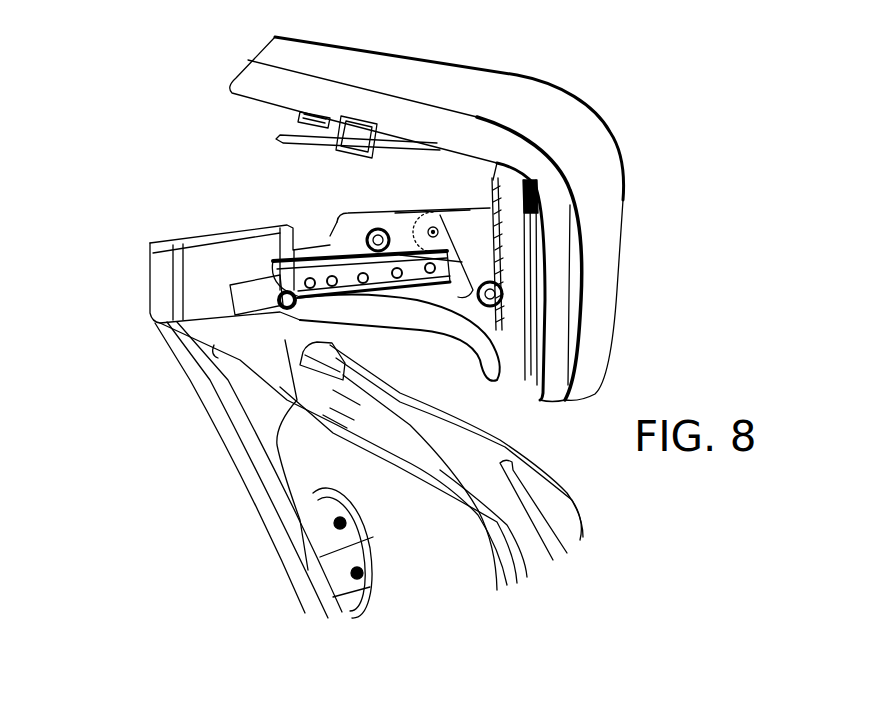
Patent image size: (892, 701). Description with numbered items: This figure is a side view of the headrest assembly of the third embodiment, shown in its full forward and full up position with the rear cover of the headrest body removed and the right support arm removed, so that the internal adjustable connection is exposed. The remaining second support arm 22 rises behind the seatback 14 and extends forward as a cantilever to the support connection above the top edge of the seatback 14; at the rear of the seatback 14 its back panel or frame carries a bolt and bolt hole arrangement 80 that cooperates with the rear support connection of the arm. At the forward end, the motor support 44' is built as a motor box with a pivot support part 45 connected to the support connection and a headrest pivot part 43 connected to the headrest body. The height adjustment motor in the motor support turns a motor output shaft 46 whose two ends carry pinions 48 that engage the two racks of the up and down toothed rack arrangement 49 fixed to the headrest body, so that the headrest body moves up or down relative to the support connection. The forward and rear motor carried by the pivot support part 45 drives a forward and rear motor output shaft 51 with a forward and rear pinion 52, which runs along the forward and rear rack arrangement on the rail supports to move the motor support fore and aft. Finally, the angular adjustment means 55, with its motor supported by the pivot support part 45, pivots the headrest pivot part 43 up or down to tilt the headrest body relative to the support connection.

The seatback 14 is at (572, 500).
The second support arm 22 is at (222, 389).
The headrest pivot part 43 is at (467, 225).
The motor support 44' is at (417, 247).
The pivot support part 45 is at (423, 213).
The motor output shaft 46 is at (503, 283).
The pinions 48 is at (503, 325).
The up and down toothed rack arrangement 49 is at (507, 250).
The forward and rear motor output shaft 51 is at (363, 232).
The forward and rear pinion 52 is at (367, 236).
The angular adjustment means 55 is at (437, 226).
The bolt and bolt hole arrangement 80 is at (340, 537).